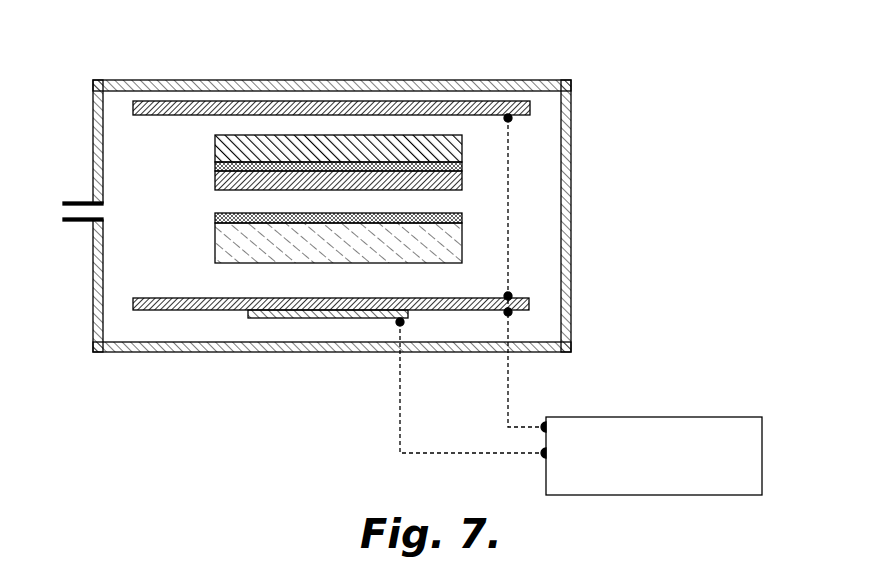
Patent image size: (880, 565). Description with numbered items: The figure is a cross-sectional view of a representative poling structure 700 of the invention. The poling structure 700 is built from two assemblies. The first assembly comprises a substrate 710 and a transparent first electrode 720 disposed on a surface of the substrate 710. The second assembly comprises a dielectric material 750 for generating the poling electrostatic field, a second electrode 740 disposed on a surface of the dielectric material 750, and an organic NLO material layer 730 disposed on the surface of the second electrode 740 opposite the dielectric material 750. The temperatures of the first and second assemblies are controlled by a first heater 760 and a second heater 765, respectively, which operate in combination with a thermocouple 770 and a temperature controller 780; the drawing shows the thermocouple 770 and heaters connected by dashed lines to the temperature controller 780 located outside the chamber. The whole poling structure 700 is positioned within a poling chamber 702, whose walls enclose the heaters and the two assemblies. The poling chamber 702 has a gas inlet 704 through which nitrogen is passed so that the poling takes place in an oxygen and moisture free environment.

The poling structure 700 is at (493, 95).
The poling chamber 702 is at (305, 352).
The gas inlet 704 is at (74, 210).
The substrate 710 is at (215, 243).
The transparent first electrode 720 is at (215, 216).
The organic NLO material layer 730 is at (215, 175).
The second electrode 740 is at (450, 166).
The dielectric material 750 is at (215, 145).
The first heater 760 is at (178, 302).
The second heater 765 is at (193, 108).
The thermocouple 770 is at (253, 313).
The temperature controller 780 is at (762, 443).